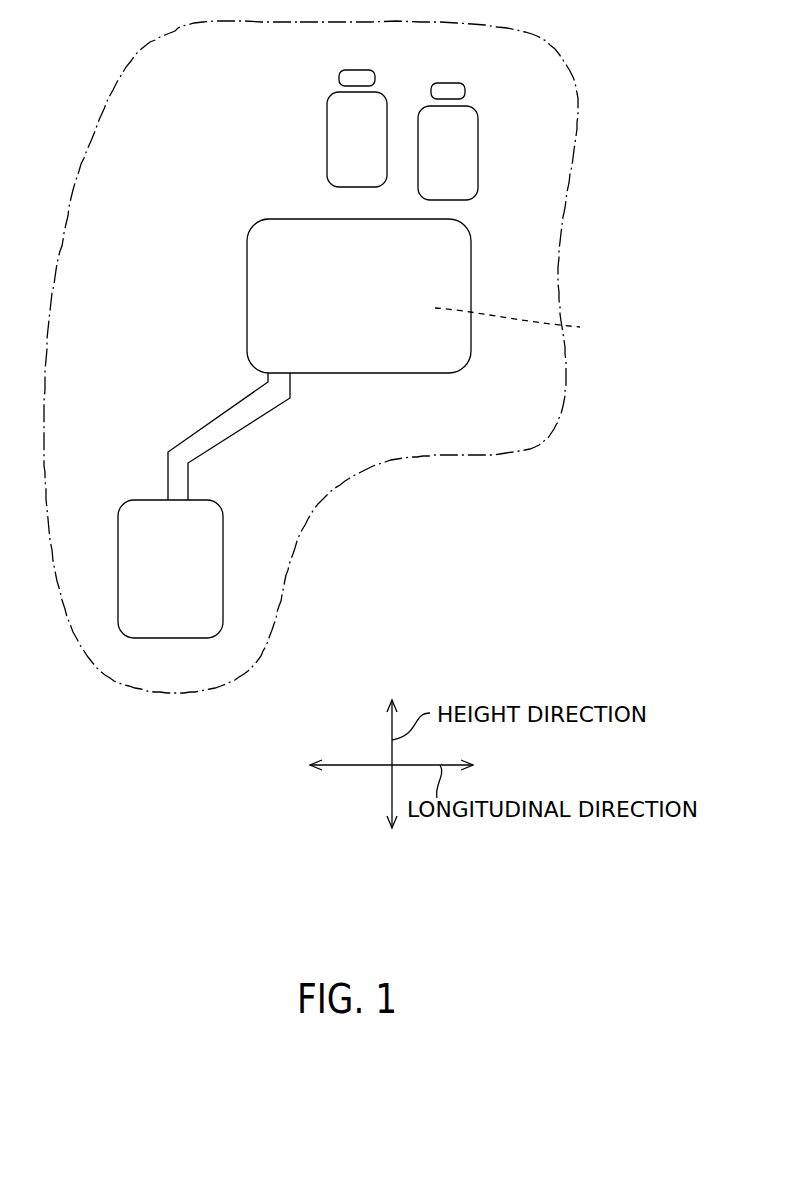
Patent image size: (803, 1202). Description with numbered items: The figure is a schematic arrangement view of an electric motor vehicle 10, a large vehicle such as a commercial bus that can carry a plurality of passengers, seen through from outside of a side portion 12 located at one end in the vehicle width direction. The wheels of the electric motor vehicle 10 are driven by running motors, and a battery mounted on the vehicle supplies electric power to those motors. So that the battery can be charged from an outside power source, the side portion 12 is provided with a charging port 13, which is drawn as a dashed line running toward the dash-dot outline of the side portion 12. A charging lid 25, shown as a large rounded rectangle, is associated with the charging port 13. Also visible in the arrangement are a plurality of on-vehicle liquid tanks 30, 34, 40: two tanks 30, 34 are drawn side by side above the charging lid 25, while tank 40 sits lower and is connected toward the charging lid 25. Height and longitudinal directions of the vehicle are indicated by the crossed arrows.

The electric motor vehicle 10 is at (356, 357).
The side portion 12 is at (523, 250).
The charging port 13 is at (522, 323).
The charging lid 25 is at (398, 360).
The on-vehicle liquid tank 30 is at (340, 135).
The on-vehicle liquid tank 34 is at (465, 148).
The on-vehicle liquid tank 40 is at (168, 626).